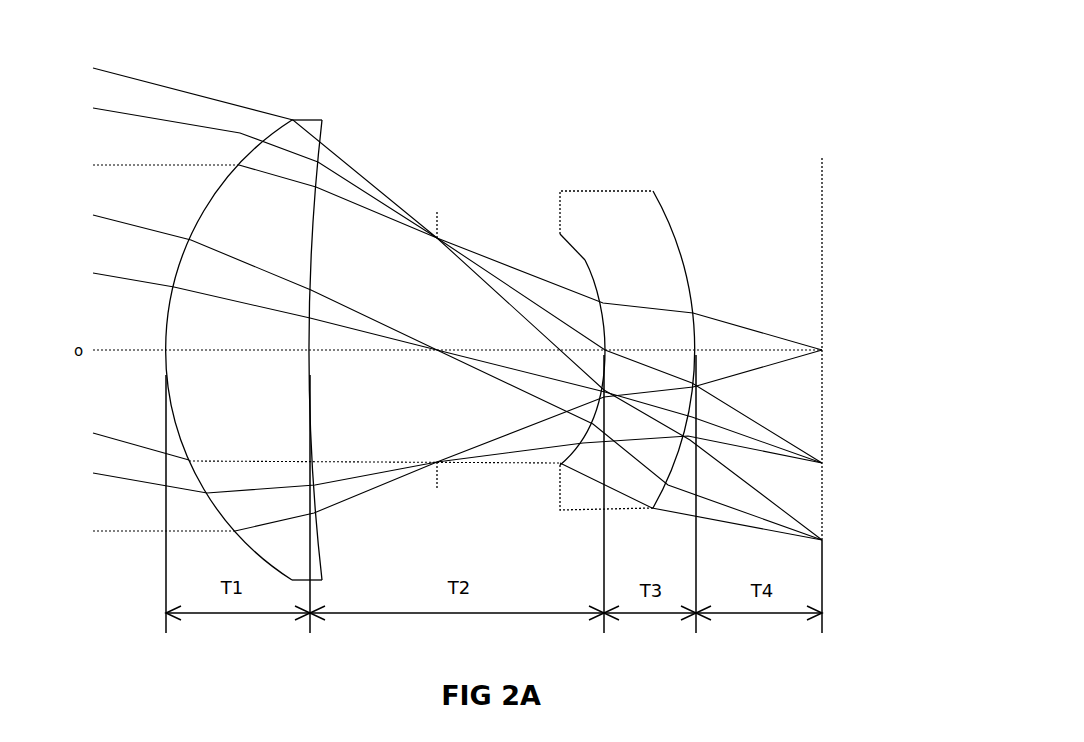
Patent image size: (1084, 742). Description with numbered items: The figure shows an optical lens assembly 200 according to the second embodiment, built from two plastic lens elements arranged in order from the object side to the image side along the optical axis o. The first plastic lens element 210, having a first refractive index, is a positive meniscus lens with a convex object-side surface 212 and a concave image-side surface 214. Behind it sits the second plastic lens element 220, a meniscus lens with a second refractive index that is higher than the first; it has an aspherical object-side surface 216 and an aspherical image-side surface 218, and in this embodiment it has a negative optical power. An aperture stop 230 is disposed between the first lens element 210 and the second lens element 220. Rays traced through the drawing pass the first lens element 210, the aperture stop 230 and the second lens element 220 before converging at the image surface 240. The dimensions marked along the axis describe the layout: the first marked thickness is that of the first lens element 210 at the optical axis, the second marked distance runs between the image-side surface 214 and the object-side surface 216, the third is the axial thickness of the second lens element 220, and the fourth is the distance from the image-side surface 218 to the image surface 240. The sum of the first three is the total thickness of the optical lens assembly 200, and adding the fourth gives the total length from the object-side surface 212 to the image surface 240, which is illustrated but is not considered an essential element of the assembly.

The optical lens assembly 200 is at (792, 88).
The first plastic lens element 210 is at (313, 127).
The convex object-side surface 212 is at (247, 155).
The concave image-side surface 214 is at (317, 178).
The aperture stop 230 is at (437, 210).
The second plastic lens element 220 is at (570, 213).
The aspherical object-side surface 216 is at (584, 259).
The aspherical image-side surface 218 is at (681, 232).
The image surface 240 is at (818, 287).